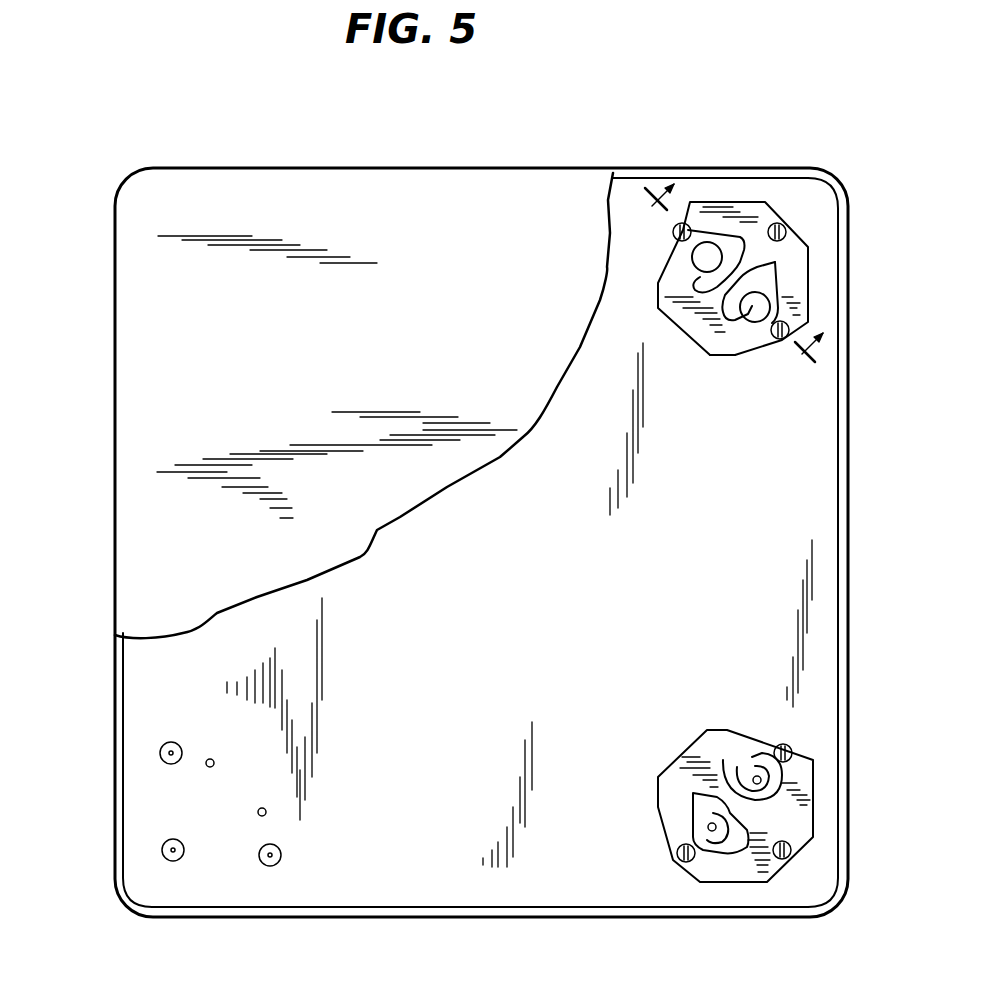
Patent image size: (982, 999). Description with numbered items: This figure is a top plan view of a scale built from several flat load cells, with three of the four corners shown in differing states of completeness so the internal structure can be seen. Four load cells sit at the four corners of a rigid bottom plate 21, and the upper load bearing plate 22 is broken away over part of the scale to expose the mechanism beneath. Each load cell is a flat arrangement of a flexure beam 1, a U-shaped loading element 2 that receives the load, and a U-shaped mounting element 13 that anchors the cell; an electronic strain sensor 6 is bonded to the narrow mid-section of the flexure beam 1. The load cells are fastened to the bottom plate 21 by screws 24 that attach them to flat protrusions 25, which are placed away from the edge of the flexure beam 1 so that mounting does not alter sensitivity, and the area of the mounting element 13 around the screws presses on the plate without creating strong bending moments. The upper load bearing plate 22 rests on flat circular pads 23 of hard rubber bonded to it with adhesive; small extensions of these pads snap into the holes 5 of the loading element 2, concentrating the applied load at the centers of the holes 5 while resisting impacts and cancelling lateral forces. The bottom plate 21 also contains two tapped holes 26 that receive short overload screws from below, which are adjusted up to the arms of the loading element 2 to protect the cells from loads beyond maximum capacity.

The flexure beam 1 is at (752, 262).
The U-shaped loading element 2 is at (710, 352).
The holes 5 is at (756, 776).
The electronic strain sensor 6 is at (726, 290).
The U-shaped mounting element 13 is at (753, 208).
The rigid bottom plate 21 is at (828, 541).
The upper load bearing plate 22 is at (128, 436).
The flat circular pad 23 is at (698, 258).
The screw 24 is at (785, 750).
The flat protrusion 25 is at (170, 743).
The tapped hole 26 is at (262, 808).